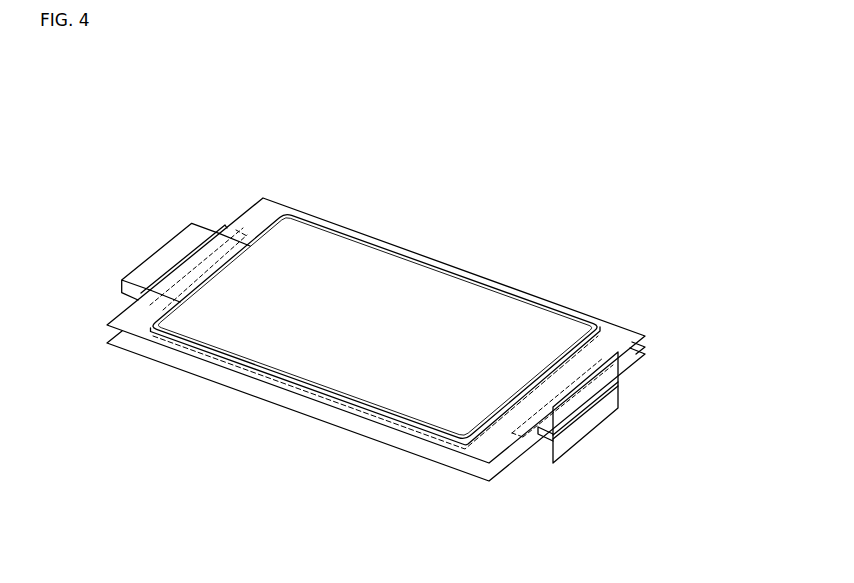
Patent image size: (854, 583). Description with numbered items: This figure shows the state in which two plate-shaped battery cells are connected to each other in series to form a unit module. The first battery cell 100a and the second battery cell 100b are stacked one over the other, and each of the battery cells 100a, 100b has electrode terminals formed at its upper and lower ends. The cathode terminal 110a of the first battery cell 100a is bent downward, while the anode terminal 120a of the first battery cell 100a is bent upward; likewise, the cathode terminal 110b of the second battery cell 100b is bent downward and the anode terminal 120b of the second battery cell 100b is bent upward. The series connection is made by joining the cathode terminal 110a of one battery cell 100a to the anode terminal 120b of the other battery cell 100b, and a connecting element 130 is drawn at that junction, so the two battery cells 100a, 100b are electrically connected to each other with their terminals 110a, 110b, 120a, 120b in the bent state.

The first battery cell 100a is at (443, 280).
The second battery cell 100b is at (233, 390).
The cathode terminal of the first battery cell 110a is at (185, 253).
The cathode terminal of the second battery cell 110b is at (553, 445).
The anode terminal of the first battery cell 120a is at (637, 358).
The anode terminal of the second battery cell 120b is at (112, 308).
The connector block 130 is at (132, 265).